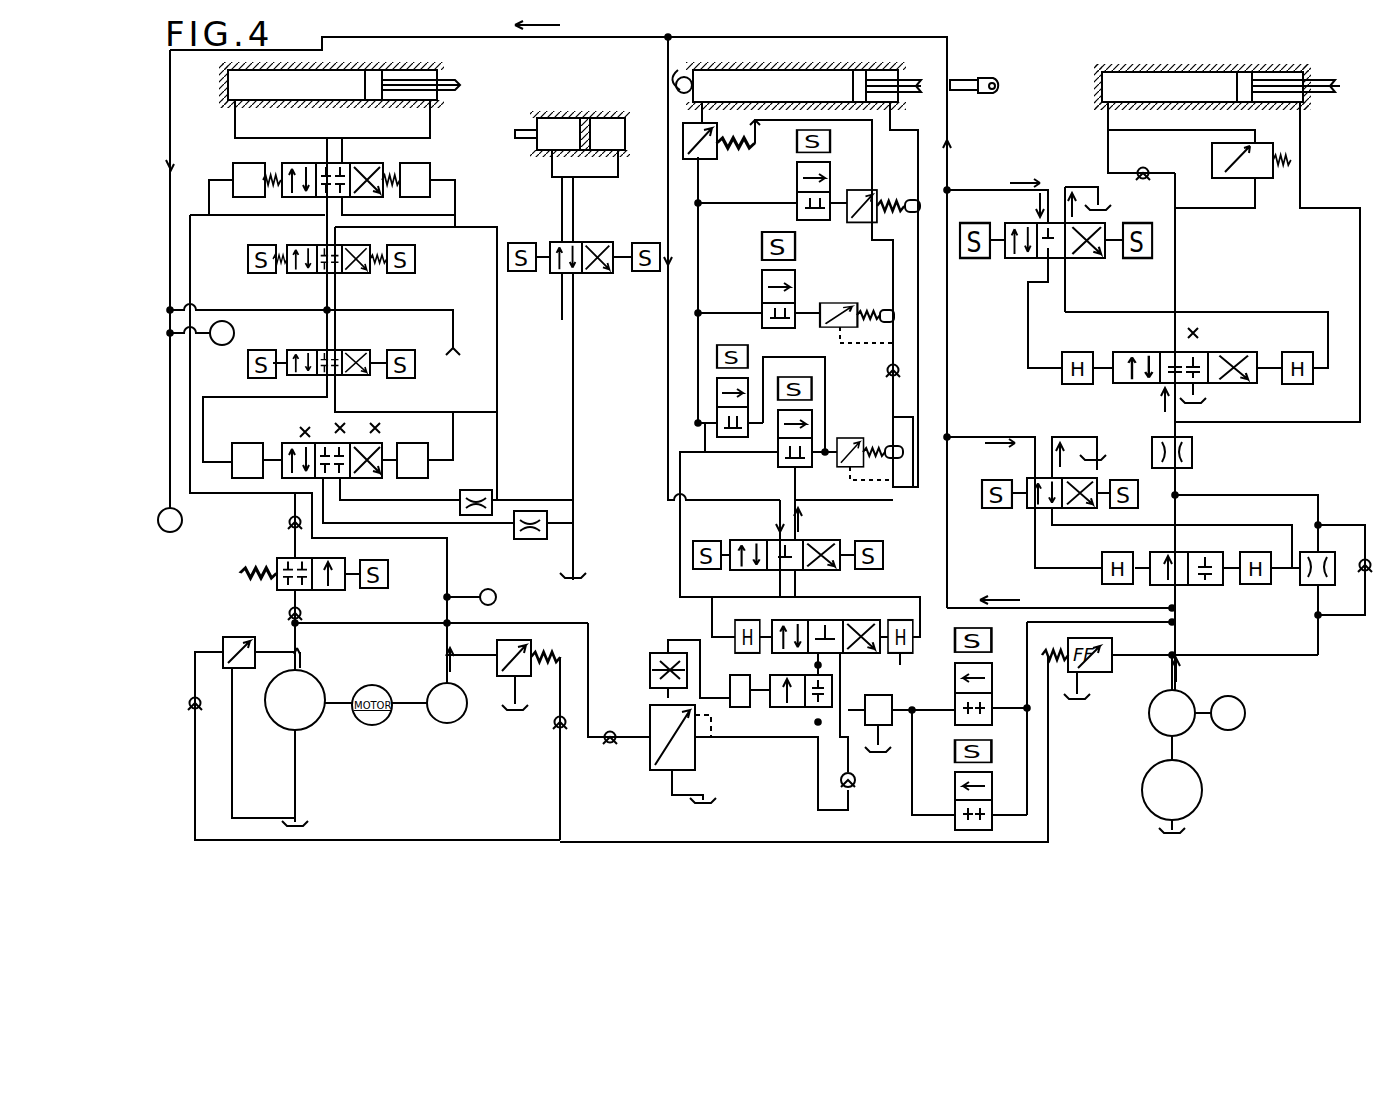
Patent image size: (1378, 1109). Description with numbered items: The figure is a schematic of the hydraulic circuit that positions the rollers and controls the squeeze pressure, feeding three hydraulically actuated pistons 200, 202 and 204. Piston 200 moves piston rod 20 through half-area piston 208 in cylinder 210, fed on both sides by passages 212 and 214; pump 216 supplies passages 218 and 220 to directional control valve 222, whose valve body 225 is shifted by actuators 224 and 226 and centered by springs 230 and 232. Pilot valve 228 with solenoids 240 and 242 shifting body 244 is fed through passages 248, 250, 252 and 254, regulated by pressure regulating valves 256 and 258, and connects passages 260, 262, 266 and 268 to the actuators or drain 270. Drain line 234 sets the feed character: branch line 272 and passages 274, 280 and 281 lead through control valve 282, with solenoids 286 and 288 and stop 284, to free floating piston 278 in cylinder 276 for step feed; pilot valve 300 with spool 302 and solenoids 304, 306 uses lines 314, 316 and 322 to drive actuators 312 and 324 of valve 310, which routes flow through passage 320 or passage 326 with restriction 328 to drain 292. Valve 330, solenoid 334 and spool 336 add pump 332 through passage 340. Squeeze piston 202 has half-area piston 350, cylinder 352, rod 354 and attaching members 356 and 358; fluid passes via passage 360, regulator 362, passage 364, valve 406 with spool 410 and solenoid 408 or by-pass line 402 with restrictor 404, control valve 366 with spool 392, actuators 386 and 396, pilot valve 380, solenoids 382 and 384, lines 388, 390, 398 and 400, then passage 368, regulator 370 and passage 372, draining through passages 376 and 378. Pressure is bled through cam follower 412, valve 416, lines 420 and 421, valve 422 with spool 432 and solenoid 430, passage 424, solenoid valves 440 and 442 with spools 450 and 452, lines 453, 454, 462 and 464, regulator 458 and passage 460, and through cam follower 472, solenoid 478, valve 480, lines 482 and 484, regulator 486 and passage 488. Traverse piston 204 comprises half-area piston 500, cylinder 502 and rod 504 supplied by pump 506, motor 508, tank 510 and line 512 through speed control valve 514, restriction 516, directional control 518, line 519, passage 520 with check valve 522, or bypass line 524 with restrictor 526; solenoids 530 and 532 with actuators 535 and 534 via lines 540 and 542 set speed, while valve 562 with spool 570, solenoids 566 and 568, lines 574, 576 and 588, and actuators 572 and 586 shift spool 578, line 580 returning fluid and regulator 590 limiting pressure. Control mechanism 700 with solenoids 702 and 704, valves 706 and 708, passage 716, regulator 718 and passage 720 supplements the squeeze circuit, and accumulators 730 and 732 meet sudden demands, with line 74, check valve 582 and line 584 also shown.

The piston rod 20 is at (464, 85).
The line 74 is at (920, 825).
The hydraulic piston 200 is at (453, 63).
The hydraulic piston 202 is at (883, 64).
The hydraulic piston 204 is at (1289, 62).
The piston 208 is at (373, 72).
The cylinder 210 is at (336, 70).
The hydraulic connecting passage 212 is at (431, 126).
The hydraulic connecting passage 214 is at (235, 126).
The pump 216 is at (438, 719).
The passage 218 is at (441, 646).
The passage 220 is at (190, 241).
The directional control valve 222 is at (422, 164).
The hydraulic actuator 224 is at (432, 178).
The valve body 225 is at (345, 165).
The hydraulic actuator 226 is at (261, 166).
The pilot valve 228 is at (420, 262).
The spring 230 is at (286, 166).
The spring 232 is at (382, 207).
The drain line 234 is at (426, 245).
The solenoid 240 is at (412, 272).
The solenoid 242 is at (250, 273).
The pilot valve body 244 is at (368, 274).
The passage 248 is at (1188, 630).
The passage 250 is at (626, 40).
The passage 252 is at (215, 310).
The passage 254 is at (325, 297).
The pressure regulating valve 256 is at (1110, 645).
The pressure regulating valve 258 is at (530, 640).
The passage 260 is at (183, 187).
The passage 262 is at (455, 203).
The passage 266 is at (340, 290).
The line 268 is at (464, 317).
The drain 270 is at (465, 359).
The branch line 272 is at (560, 776).
The passage 274 is at (553, 192).
The cylinder 276 is at (557, 118).
The free floating piston 278 is at (605, 118).
The passage 280 is at (573, 190).
The passage 281 is at (574, 404).
The control valve 282 is at (585, 274).
The stop 284 is at (515, 137).
The solenoid 286 is at (519, 242).
The solenoid 288 is at (645, 242).
The drain 292 is at (573, 580).
The pilot valve 300 is at (353, 343).
The spool member 302 is at (362, 378).
The solenoid 304 is at (398, 350).
The solenoid 306 is at (248, 364).
The valve 310 is at (472, 439).
The actuator 312 is at (248, 430).
The line 314 is at (325, 340).
The line 316 is at (238, 388).
The passage 320 is at (382, 528).
The passage 322 is at (444, 400).
The actuator 324 is at (412, 443).
The passage 326 is at (530, 511).
The fixed restriction 328 is at (496, 475).
The solenoid actuator valve 330 is at (393, 562).
The pump 332 is at (295, 700).
The solenoid 334 is at (388, 576).
The spool 336 is at (322, 601).
The passage 340 is at (305, 641).
The half-area piston 350 is at (858, 70).
The cylinder 352 is at (752, 70).
The piston rod 354 is at (968, 80).
The attaching member 356 is at (690, 74).
The attaching member 358 is at (978, 93).
The passage 360 is at (590, 626).
The pressure regulating valve 362 is at (658, 766).
The passage 364 is at (748, 746).
The control valve 366 is at (877, 620).
The passage 368 is at (698, 247).
The pressure regulator 370 is at (714, 158).
The passage 372 is at (703, 119).
The passage 376 is at (947, 336).
The passage 378 is at (840, 647).
The pilot valve 380 is at (752, 540).
The solenoid 382 is at (705, 540).
The solenoid 384 is at (876, 545).
The actuator 386 is at (755, 620).
The line 388 is at (668, 165).
The line 390 is at (683, 580).
The spool 392 is at (766, 620).
The actuator 396 is at (868, 653).
The line 398 is at (920, 615).
The line 400 is at (845, 512).
The by-pass line 402 is at (668, 698).
The restrictor 404 is at (650, 661).
The solenoid operated control valve 406 is at (738, 670).
The solenoid 408 is at (740, 728).
The spool 410 is at (778, 702).
The cam follower 412 is at (876, 212).
The valve 416 is at (860, 198).
The line 420 is at (757, 205).
The line 421 is at (843, 222).
The solenoid actuated valve 422 is at (830, 170).
The passage 424 is at (893, 260).
The solenoid 430 is at (830, 147).
The spool valve 432 is at (797, 195).
The solenoid valve 440 is at (745, 345).
The solenoid valve 442 is at (808, 378).
The spool 450 is at (717, 388).
The spool 452 is at (819, 412).
The line 453 is at (713, 420).
The line 454 is at (832, 388).
The pressure regulating valve 458 is at (853, 438).
The passage 460 is at (870, 478).
The passage 462 is at (722, 454).
The passage 464 is at (818, 468).
The cam follower 472 is at (893, 439).
The solenoid 478 is at (795, 250).
The valve 480 is at (795, 300).
The line 482 is at (726, 311).
The line 484 is at (833, 303).
The pressure regulating valve 486 is at (820, 328).
The passage 488 is at (872, 327).
The half-area piston 500 is at (1250, 72).
The cylinder 502 is at (1143, 72).
The piston rod 504 is at (1320, 78).
The pump 506 is at (1149, 702).
The motor 508 is at (1235, 705).
The tank 510 is at (1160, 825).
The line 512 is at (1165, 748).
The speed control valve 514 is at (1185, 552).
The fixed restriction 516 is at (1192, 451).
The directional control 518 is at (1222, 397).
The line 519 is at (1176, 495).
The passage 520 is at (1176, 283).
The check valve 522 is at (1143, 170).
The line 524 is at (1269, 495).
The restrictor 526 is at (1300, 590).
The solenoid 530 is at (985, 480).
The solenoid 532 is at (1119, 470).
The actuator 534 is at (1120, 548).
The actuator 535 is at (1260, 552).
The line 540 is at (975, 437).
The line 542 is at (1250, 513).
The solenoid actuated valve 562 is at (1005, 263).
The solenoid 566 is at (971, 222).
The solenoid 568 is at (1135, 223).
The spool 570 is at (1070, 258).
The actuator 572 is at (1062, 377).
The line 574 is at (998, 187).
The line 576 is at (1025, 346).
The spool 578 is at (1130, 383).
The line 580 is at (1303, 185).
The check valve 582 is at (1362, 520).
The line 584 is at (1360, 588).
The actuator 586 is at (1290, 352).
The line 588 is at (1256, 310).
The pressure regulating valve 590 is at (1235, 174).
The control mechanism 700 is at (988, 692).
The solenoid 702 is at (980, 628).
The solenoid 704 is at (955, 752).
The valve 706 is at (992, 676).
The valve 708 is at (955, 788).
The passage 716 is at (923, 735).
The pressure regulator 718 is at (890, 709).
The passage 720 is at (852, 772).
The accumulator 730 is at (234, 331).
The accumulator 732 is at (488, 591).